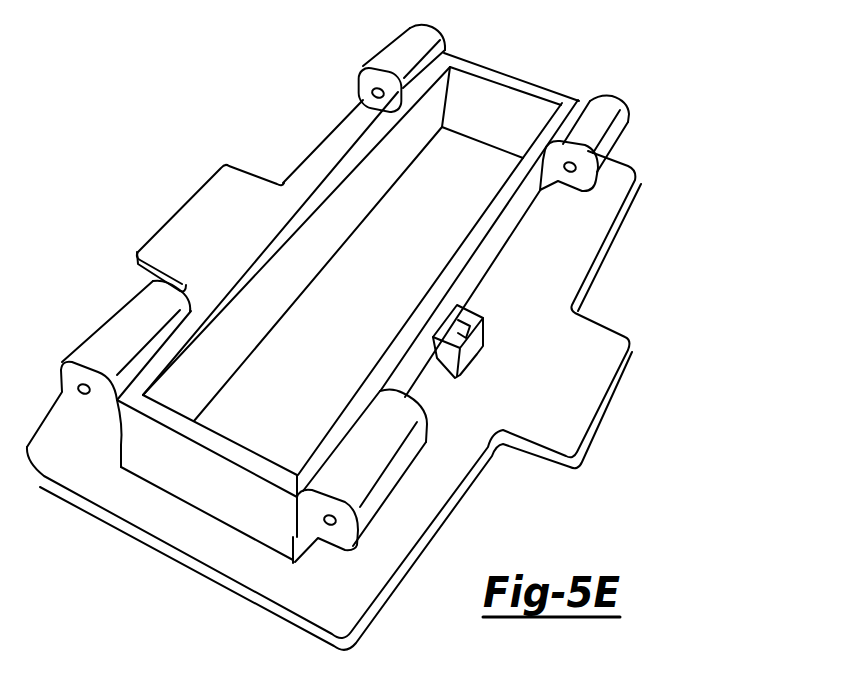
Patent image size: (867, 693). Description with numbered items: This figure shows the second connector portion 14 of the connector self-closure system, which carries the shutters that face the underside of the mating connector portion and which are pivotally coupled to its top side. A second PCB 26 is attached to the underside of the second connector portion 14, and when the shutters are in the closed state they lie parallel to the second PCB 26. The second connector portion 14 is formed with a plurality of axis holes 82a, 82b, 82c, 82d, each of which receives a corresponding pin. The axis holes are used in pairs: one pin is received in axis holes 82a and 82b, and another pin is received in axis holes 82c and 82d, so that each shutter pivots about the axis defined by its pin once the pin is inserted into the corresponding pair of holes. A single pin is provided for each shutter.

The second connector portion 14 is at (740, 228).
The second PCB 26 is at (182, 531).
The axis hole 82a is at (84, 392).
The axis hole 82b is at (377, 93).
The axis hole 82c is at (330, 522).
The axis hole 82d is at (570, 168).